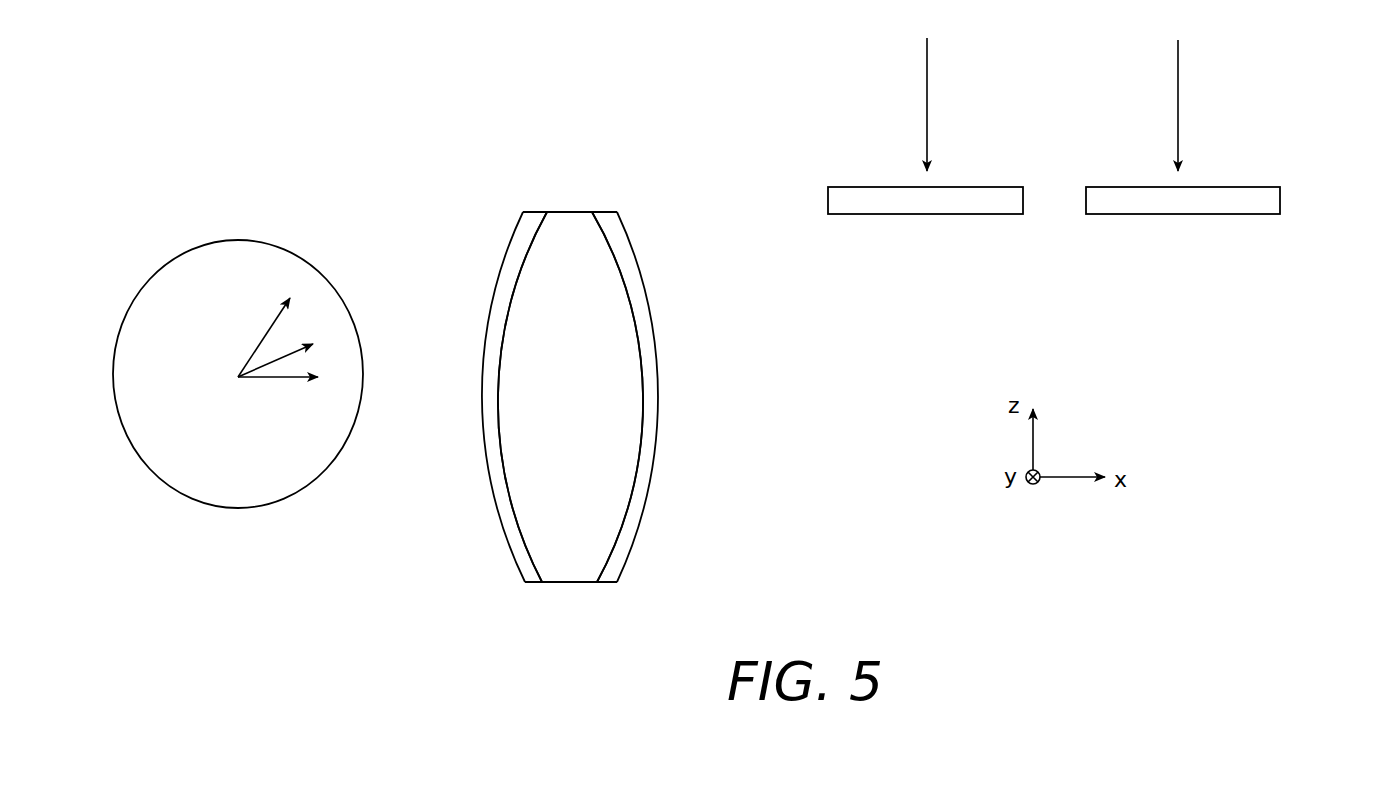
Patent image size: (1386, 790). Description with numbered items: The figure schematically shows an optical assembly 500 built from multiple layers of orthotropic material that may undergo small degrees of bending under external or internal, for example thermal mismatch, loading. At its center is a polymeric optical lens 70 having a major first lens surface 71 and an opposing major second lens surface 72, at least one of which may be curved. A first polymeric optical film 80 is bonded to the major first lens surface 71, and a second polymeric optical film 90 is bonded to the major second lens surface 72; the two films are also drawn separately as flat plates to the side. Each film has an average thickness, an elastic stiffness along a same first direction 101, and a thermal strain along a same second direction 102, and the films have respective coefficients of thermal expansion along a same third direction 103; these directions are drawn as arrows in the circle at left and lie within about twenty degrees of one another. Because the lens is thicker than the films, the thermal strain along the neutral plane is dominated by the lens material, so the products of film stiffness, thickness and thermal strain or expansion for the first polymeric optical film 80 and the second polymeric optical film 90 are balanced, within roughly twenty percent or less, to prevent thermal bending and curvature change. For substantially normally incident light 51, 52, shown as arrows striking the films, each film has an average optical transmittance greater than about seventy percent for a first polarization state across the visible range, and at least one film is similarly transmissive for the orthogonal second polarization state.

The optical assembly 500 is at (386, 170).
The polymeric optical lens 70 is at (593, 419).
The major first lens surface 71 is at (630, 288).
The major second lens surface 72 is at (508, 295).
The first polymeric optical film 80 is at (652, 440).
The second polymeric optical film 90 is at (497, 440).
The substantially normally incident light 51 is at (927, 100).
The substantially normally incident light 52 is at (1178, 102).
The first direction 101 is at (297, 348).
The second direction 102 is at (260, 337).
The third direction 103 is at (295, 380).